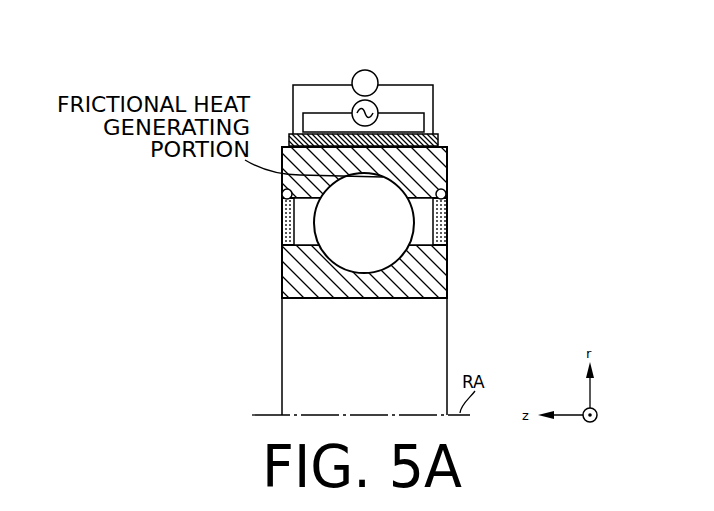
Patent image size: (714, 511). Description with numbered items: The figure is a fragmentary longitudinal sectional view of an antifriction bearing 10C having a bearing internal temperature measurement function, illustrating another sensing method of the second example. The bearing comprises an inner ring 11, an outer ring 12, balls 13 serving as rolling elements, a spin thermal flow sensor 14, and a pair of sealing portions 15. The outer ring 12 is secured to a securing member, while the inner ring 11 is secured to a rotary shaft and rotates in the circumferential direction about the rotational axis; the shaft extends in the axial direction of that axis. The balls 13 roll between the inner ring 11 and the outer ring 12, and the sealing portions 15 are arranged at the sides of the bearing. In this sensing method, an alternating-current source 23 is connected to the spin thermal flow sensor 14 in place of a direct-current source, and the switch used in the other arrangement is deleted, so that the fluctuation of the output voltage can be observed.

The antifriction bearing with a bearing internal temperature measurement function 10C is at (256, 86).
The inner ring 11 is at (448, 280).
The outer ring 12 is at (448, 180).
The balls (rolling elements) 13 is at (402, 230).
The spin thermal flow sensor 14 is at (438, 135).
The sealing portions 15 is at (447, 210).
The alternating-current source 23 is at (378, 108).